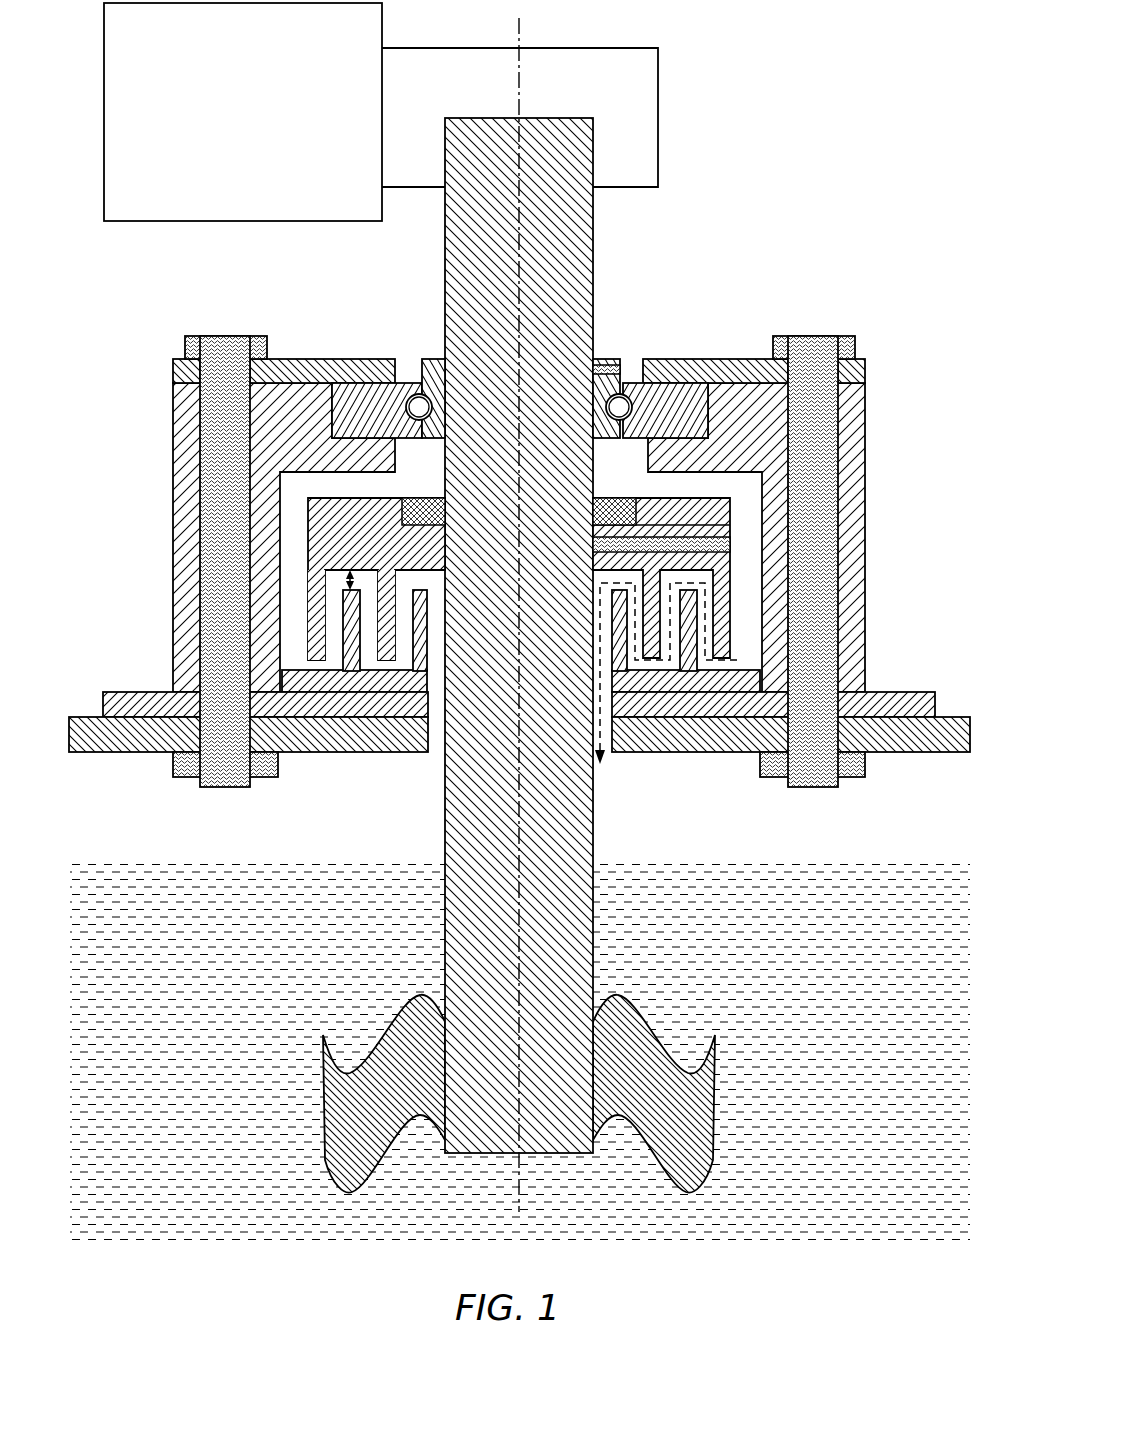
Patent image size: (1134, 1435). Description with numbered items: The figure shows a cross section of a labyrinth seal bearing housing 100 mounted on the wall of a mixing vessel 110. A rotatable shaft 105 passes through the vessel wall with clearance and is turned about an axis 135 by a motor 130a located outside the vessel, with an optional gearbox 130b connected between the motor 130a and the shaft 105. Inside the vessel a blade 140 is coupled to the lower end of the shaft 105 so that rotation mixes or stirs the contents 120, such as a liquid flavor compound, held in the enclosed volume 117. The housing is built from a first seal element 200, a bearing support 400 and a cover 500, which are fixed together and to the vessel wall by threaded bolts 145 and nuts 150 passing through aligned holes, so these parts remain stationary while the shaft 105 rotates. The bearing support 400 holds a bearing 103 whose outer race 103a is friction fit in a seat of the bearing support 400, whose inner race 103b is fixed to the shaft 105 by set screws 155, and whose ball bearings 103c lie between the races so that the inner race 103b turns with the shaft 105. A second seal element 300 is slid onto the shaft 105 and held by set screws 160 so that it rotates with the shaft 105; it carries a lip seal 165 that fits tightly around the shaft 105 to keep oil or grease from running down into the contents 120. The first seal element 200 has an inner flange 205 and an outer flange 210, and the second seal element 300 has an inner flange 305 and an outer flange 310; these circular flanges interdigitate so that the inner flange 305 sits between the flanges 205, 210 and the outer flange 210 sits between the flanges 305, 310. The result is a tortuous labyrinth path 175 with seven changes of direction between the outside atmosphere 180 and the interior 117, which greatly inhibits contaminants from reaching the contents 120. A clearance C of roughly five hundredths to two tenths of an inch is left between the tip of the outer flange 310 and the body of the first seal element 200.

The labyrinth seal bearing housing 100 is at (755, 190).
The bearing 103 is at (485, 338).
The outer race 103a is at (372, 388).
The inner race 103b is at (432, 372).
The ball bearings 103c is at (415, 392).
The shaft 105 is at (593, 248).
The mixing vessel 110 is at (948, 717).
The enclosed volume 117 is at (120, 811).
The contents 120 is at (180, 878).
The motor 130a is at (155, 222).
The gearbox 130b is at (658, 100).
The axis 135 is at (521, 70).
The blade 140 is at (397, 1112).
The threaded bolt 145 is at (838, 405).
The nut 150 is at (262, 782).
The set screws 155 is at (609, 365).
The set screws 160 is at (730, 542).
The lip seal 165 is at (605, 497).
The labyrinth path 175 is at (608, 763).
The outside atmosphere 180 is at (120, 639).
The first seal element 200 is at (608, 701).
The inner flange 205 is at (420, 656).
The outer flange 210 is at (350, 662).
The second seal element 300 is at (603, 645).
The inner flange 305 is at (384, 656).
The outer flange 310 is at (315, 656).
The bearing support 400 is at (554, 480).
The cover 500 is at (700, 378).
The clearance C is at (343, 578).